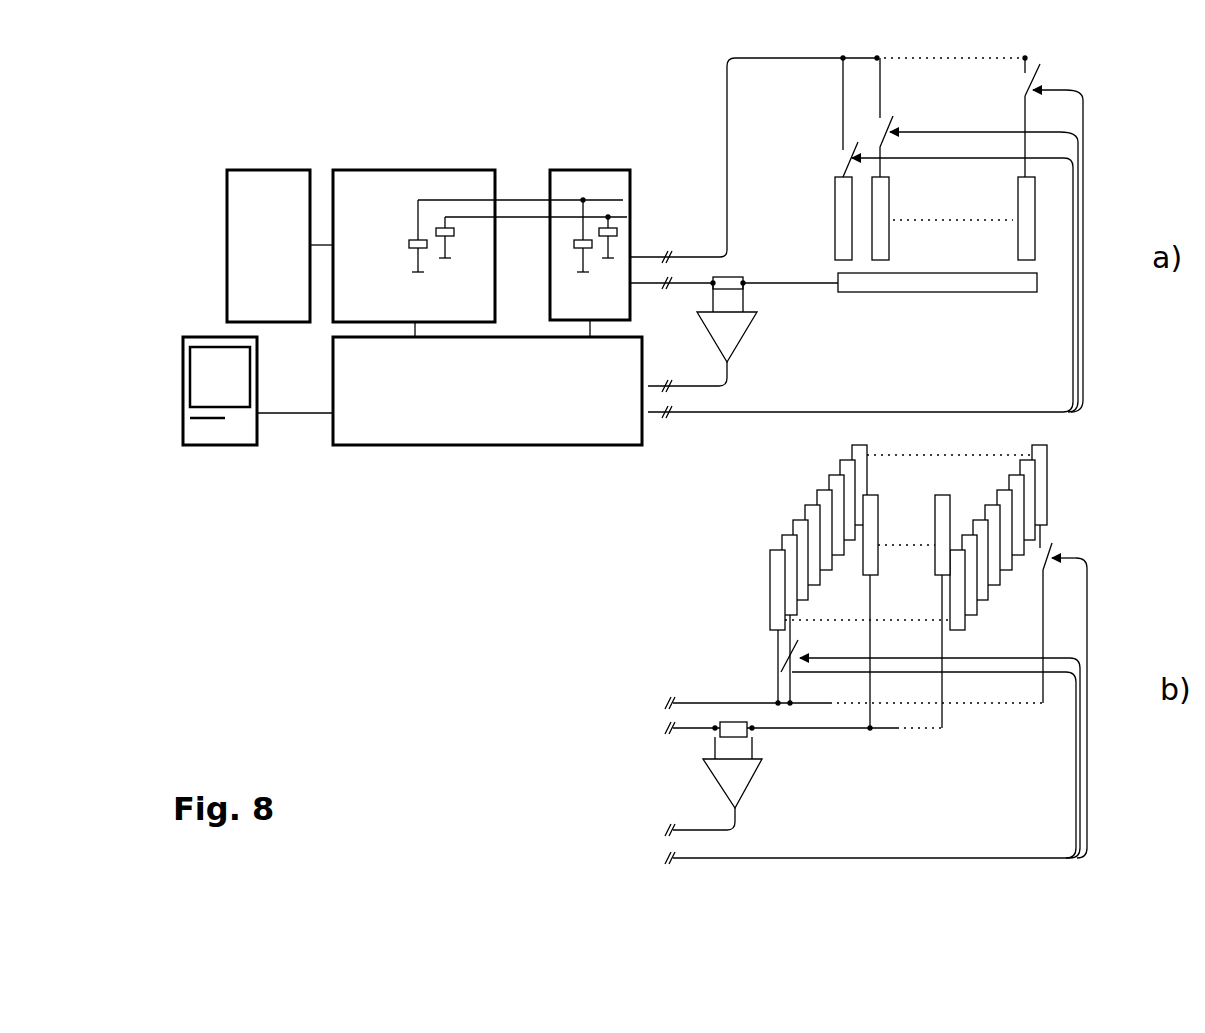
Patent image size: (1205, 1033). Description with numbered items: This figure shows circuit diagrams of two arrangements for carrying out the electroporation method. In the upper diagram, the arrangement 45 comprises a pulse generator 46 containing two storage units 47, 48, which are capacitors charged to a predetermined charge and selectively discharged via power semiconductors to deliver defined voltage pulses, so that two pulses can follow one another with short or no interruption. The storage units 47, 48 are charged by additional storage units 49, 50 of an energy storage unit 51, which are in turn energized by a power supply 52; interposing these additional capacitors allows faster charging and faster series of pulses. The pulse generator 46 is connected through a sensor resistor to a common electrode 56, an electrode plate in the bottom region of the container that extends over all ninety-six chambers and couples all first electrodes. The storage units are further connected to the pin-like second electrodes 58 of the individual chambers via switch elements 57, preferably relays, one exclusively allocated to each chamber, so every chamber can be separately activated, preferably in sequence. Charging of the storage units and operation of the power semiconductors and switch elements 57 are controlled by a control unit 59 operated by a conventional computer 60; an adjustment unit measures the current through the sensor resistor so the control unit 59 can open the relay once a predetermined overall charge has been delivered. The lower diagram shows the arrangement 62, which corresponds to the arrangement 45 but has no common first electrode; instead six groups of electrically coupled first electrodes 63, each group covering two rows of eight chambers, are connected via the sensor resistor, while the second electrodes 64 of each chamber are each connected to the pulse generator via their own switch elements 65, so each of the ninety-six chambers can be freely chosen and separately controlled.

The arrangement 45 is at (1112, 318).
The pulse generator 46 is at (580, 170).
The storage unit 47 is at (578, 250).
The storage unit 48 is at (615, 228).
The storage unit 49 is at (410, 243).
The storage unit 50 is at (455, 230).
The energy storage unit 51 is at (400, 170).
The power supply 52 is at (258, 170).
The common electrode 56 is at (980, 292).
The switch element 57 is at (843, 160).
The second electrode 58 is at (1018, 200).
The control unit 59 is at (475, 445).
The computer 60 is at (215, 445).
The arrangement 62 is at (562, 658).
The first electrode 63 is at (957, 495).
The second electrode 64 is at (802, 512).
The switch element 65 is at (778, 660).